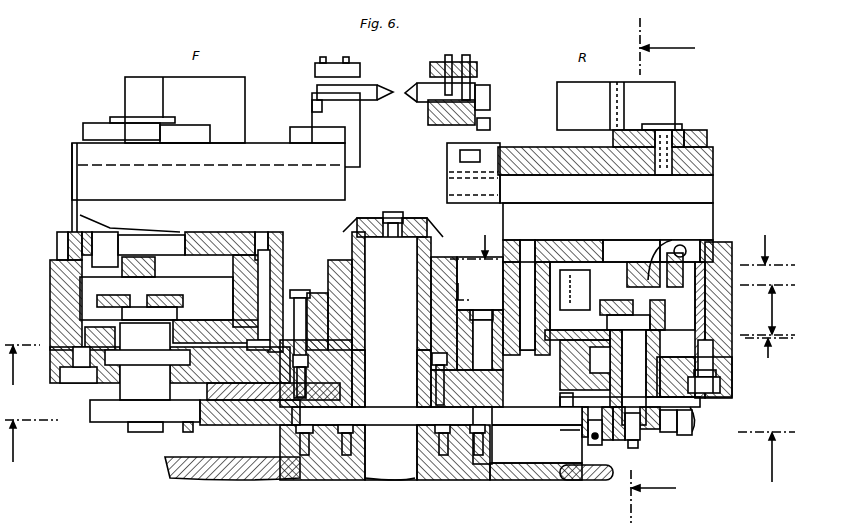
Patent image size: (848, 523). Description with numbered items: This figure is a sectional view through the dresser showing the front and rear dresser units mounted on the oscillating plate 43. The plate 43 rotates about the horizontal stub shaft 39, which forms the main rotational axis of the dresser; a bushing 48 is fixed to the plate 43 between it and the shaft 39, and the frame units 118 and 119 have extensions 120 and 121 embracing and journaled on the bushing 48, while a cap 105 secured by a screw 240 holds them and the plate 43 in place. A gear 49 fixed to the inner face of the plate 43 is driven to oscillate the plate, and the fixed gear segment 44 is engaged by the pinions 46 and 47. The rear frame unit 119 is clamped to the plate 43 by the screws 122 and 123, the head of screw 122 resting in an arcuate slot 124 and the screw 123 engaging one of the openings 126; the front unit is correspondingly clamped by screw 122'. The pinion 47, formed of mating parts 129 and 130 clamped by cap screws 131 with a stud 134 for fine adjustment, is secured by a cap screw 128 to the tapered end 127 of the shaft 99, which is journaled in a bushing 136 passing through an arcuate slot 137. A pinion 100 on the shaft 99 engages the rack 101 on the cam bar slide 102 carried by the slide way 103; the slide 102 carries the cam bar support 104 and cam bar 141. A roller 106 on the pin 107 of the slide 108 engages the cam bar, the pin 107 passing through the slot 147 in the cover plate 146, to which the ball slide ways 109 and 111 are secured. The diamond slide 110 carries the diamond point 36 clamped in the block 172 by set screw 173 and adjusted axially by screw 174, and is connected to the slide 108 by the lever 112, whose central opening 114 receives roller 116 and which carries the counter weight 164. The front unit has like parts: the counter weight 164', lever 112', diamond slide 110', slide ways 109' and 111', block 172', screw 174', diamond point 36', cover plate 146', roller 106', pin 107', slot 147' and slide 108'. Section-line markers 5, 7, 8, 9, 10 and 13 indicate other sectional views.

The counter weight 164' is at (195, 99).
The lever 112' is at (126, 130).
The diamond slide 110' is at (208, 152).
The ball slide way 109' is at (56, 186).
The ball slide way 111' is at (51, 187).
The block 172' is at (354, 130).
The screw 174' is at (330, 55).
The set screw 173 is at (346, 57).
The screw 174 is at (485, 71).
The diamond point 36' is at (355, 81).
The diamond point 36 is at (437, 82).
The block 172 is at (444, 112).
The ball slide way 111 is at (481, 151).
The diamond slide 110 is at (605, 147).
The counter weight 164 is at (640, 105).
The roller 116 is at (670, 124).
The central opening 114 is at (690, 133).
The lever 112 is at (683, 138).
The ball slide way 109 is at (628, 189).
The slide 108 is at (630, 221).
The cam bar 141 is at (690, 240).
The pin 107 is at (718, 247).
The slot 147 is at (608, 251).
The cover plate 146 is at (503, 281).
The roller 106 is at (734, 320).
The cam bar support 104 is at (700, 270).
The cam bar slide 102 is at (570, 271).
The slide way 103 is at (616, 299).
The rack 101 is at (618, 315).
The pinion 100 is at (635, 377).
The arcuate slot 137 is at (588, 376).
The bushing 136 is at (610, 393).
The arcuate slot 124 is at (713, 372).
The plate 43 is at (732, 388).
The screw 122 is at (717, 399).
The pinion part 129 is at (695, 418).
The pinion 47 is at (692, 430).
The pinion part 130 is at (672, 435).
The tapered end 127 is at (634, 440).
The cap screws 131 is at (640, 435).
The cap screw 128 is at (612, 440).
The shaft 99 is at (594, 445).
The stud 134 is at (583, 430).
The cap 105 is at (362, 218).
The screw 240 is at (398, 212).
The bushing 48 is at (417, 378).
The extension 120 is at (328, 265).
The extension 121 is at (318, 285).
The section line 8 is at (740, 318).
The screw 123 is at (488, 295).
The section line 10 is at (622, 250).
The section line 9 is at (625, 309).
The frame unit 119 is at (500, 380).
The openings 126 is at (492, 430).
The stub shaft 39 is at (372, 474).
The frame unit 118 is at (50, 302).
The cover plate 146' is at (48, 232).
The roller 106' is at (55, 247).
The pin 107' is at (115, 238).
The slot 147' is at (200, 292).
The slide 108' is at (96, 210).
The screw 122' is at (62, 376).
The pinion 46 is at (110, 422).
The gear segment 44 is at (248, 420).
The gear 49 is at (228, 402).
The section line 7 is at (400, 361).
The section line 5 is at (400, 451).
The section line 13 is at (663, 270).